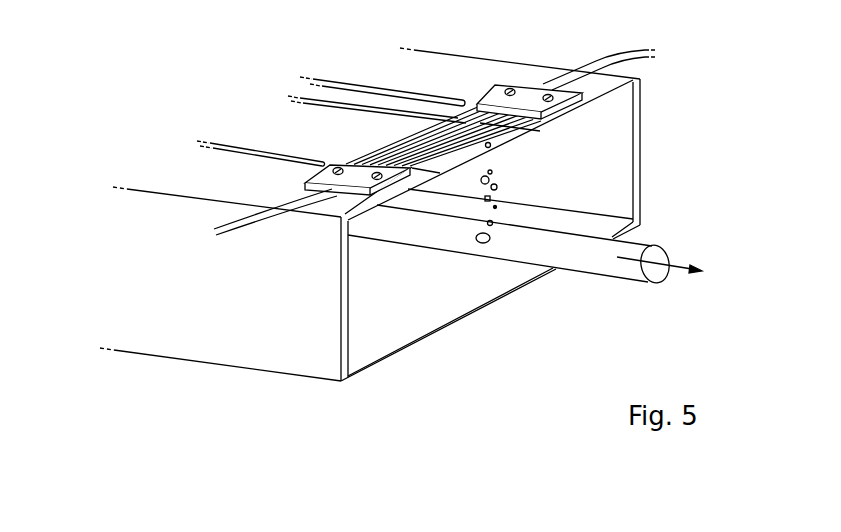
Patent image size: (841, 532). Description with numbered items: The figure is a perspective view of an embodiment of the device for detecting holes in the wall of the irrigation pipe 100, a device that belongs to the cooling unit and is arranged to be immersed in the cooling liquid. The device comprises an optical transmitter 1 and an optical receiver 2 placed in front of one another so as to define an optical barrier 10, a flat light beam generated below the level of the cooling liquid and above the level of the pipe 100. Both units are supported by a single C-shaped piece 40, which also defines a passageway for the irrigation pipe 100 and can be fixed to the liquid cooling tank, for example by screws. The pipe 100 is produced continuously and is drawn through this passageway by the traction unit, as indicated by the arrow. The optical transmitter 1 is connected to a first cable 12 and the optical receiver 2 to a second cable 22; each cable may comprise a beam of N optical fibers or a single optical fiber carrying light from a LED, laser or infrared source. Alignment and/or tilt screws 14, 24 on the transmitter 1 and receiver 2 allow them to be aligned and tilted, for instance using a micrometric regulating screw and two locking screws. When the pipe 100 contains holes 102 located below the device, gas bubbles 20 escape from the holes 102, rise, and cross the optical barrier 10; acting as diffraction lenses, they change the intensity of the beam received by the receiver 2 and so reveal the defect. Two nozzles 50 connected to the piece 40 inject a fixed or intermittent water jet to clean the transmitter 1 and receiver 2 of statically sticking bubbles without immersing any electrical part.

The optical transmitter 1 is at (360, 184).
The optical receiver 2 is at (494, 96).
The optical barrier 10 is at (436, 156).
The first cable 12 is at (253, 229).
The alignment and/or tilt screws 14 is at (371, 177).
The gas bubbles 20 is at (497, 206).
The second cable 22 is at (613, 55).
The alignment and/or tilt screws 24 is at (546, 94).
The C-shaped piece 40 is at (365, 376).
The nozzles 50 is at (253, 143).
The irrigation pipe 100 is at (639, 249).
The holes 102 is at (478, 244).